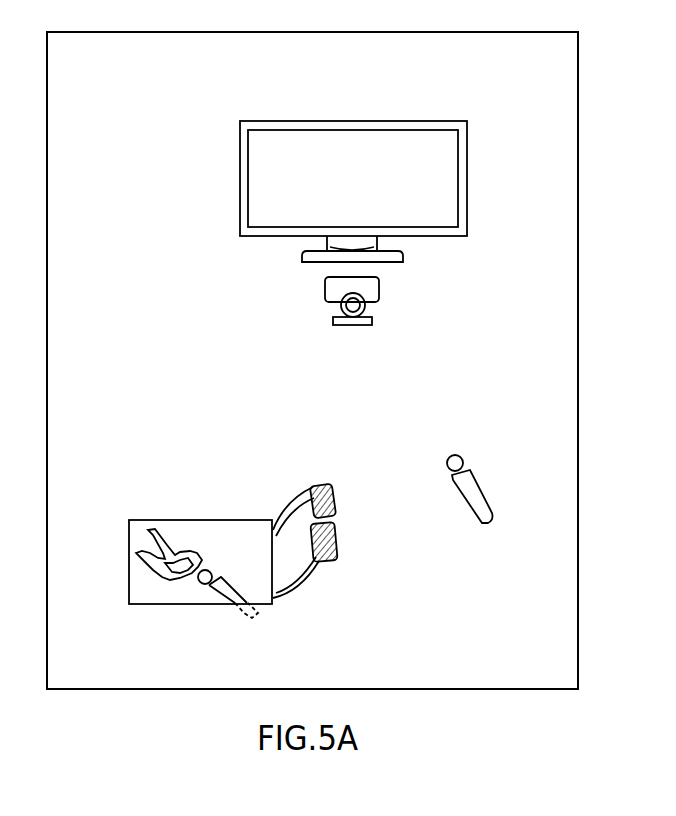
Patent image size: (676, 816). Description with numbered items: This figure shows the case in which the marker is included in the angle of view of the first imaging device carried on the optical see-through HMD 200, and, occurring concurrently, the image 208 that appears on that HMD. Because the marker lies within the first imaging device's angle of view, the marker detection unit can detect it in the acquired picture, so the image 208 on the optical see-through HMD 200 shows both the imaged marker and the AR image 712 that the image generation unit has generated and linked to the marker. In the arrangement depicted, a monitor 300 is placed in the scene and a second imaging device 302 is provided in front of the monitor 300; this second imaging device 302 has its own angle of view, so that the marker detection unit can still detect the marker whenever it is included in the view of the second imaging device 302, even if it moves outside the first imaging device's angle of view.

The monitor 300 is at (353, 121).
The second imaging device 302 is at (380, 290).
The image 208 is at (137, 518).
The AR image 712 is at (181, 535).
The optical see-through HMD 200 is at (308, 587).